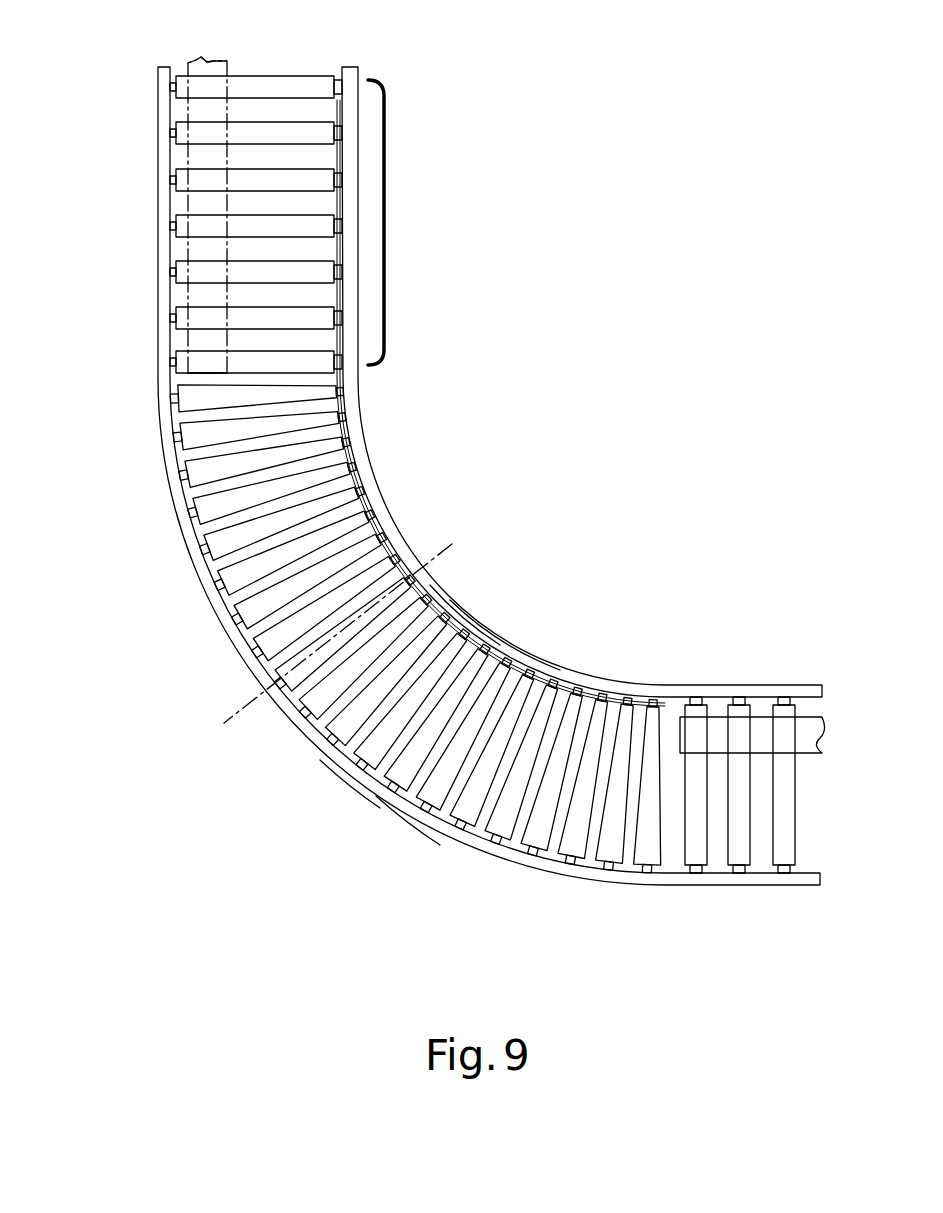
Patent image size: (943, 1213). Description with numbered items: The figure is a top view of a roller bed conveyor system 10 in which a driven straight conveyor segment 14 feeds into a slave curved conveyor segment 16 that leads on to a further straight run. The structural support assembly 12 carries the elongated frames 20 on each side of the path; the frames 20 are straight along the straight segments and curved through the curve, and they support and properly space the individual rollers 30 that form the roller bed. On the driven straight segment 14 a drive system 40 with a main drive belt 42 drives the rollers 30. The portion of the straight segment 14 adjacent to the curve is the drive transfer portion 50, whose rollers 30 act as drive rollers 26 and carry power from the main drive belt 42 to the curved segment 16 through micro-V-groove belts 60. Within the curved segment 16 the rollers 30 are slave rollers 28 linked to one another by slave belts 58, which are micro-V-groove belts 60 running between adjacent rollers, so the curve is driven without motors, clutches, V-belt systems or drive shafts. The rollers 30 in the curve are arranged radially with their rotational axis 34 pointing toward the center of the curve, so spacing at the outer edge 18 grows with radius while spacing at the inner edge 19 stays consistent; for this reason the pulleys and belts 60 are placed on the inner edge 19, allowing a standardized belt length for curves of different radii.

The conveyor system 10 is at (634, 367).
The structural support assembly 12 is at (501, 848).
The driven straight conveyor segment 14 is at (350, 92).
The slave curved conveyor segment 16 is at (494, 643).
The outer edge 18 is at (325, 756).
The inner edge 19 is at (458, 613).
The elongated frames 20 is at (381, 792).
The drive roller 26 is at (262, 180).
The slave roller 28 is at (225, 437).
The rollers 30 is at (290, 83).
The rotational axis 34 is at (232, 712).
The drive system 40 is at (140, 161).
The main drive belt 42 is at (200, 110).
The drive transfer portion 50 is at (388, 214).
The slave belts 58 is at (355, 530).
The micro-V-groove belts 60 is at (395, 545).